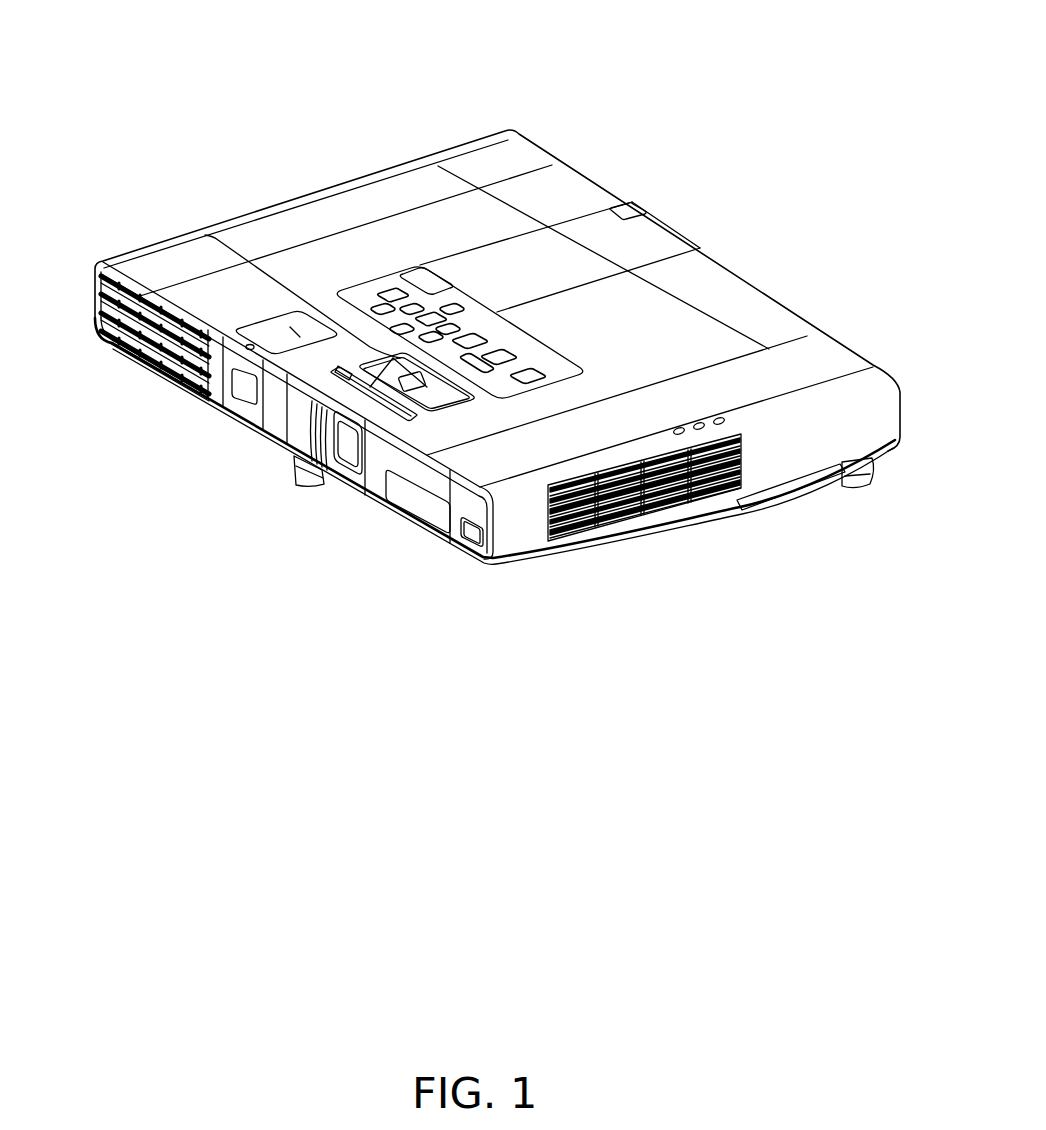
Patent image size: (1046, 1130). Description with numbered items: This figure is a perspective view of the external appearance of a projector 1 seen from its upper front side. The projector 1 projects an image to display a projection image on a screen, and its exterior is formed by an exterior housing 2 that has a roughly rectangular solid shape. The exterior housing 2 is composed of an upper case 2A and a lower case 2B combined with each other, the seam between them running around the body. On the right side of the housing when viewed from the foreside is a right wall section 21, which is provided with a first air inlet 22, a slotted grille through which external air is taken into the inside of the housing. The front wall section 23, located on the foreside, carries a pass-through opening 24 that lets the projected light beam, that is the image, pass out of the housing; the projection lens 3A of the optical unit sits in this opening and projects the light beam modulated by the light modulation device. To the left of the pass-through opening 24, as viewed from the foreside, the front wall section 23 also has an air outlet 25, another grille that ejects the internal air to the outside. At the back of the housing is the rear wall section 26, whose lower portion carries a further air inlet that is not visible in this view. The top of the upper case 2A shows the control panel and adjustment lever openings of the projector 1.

The projector 1 is at (293, 111).
The exterior housing 2 is at (877, 313).
The upper case 2A is at (760, 310).
The lower case 2B is at (737, 500).
The projection lens 3A is at (351, 452).
The right wall section 21 is at (531, 533).
The first air inlet 22 is at (672, 508).
The front wall section 23 is at (276, 400).
The pass-through opening 24 is at (362, 465).
The air outlet 25 is at (150, 355).
The rear wall section 26 is at (677, 231).